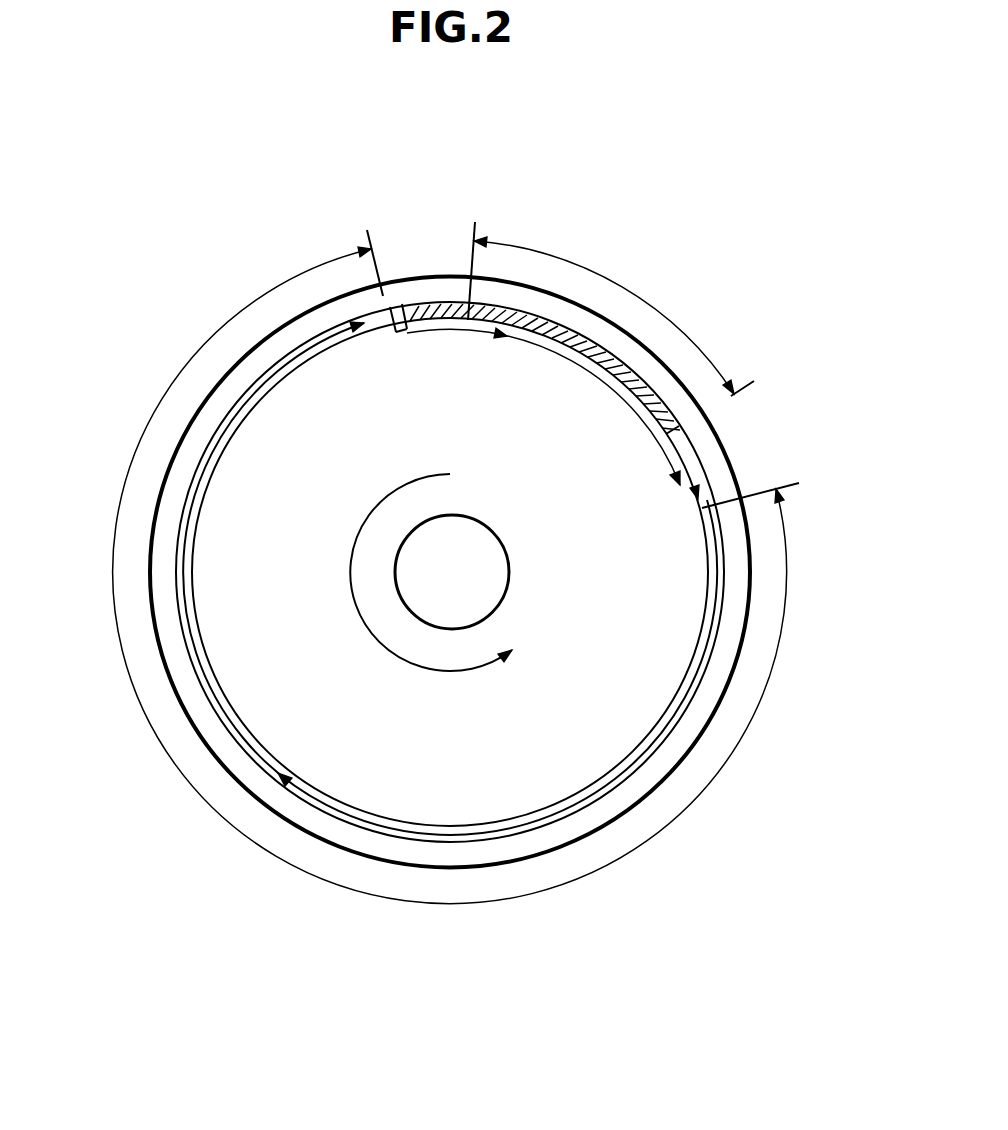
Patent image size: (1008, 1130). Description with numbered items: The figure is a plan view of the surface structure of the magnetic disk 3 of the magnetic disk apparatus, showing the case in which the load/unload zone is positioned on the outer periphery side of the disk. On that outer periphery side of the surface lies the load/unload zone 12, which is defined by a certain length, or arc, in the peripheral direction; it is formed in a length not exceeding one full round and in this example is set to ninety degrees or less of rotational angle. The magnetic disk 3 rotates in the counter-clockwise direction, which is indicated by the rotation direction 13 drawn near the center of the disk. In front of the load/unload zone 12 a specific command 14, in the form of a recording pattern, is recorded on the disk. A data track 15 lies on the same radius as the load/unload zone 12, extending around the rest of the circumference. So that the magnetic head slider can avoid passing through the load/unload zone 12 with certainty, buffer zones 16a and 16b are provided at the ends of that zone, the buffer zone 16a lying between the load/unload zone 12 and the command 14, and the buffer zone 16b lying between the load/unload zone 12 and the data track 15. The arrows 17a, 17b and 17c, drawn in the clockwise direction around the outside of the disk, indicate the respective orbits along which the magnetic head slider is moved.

The magnetic disk 3 is at (260, 685).
The load/unload zone 12 is at (553, 320).
The rotation direction 13 is at (355, 548).
The specific command 14 is at (398, 310).
The data track 15 is at (330, 815).
The buffer zone 16a is at (437, 310).
The buffer zone 16b is at (688, 466).
The orbit arrow 17a is at (230, 410).
The orbit arrow 17b is at (597, 370).
The orbit arrow 17c is at (610, 795).